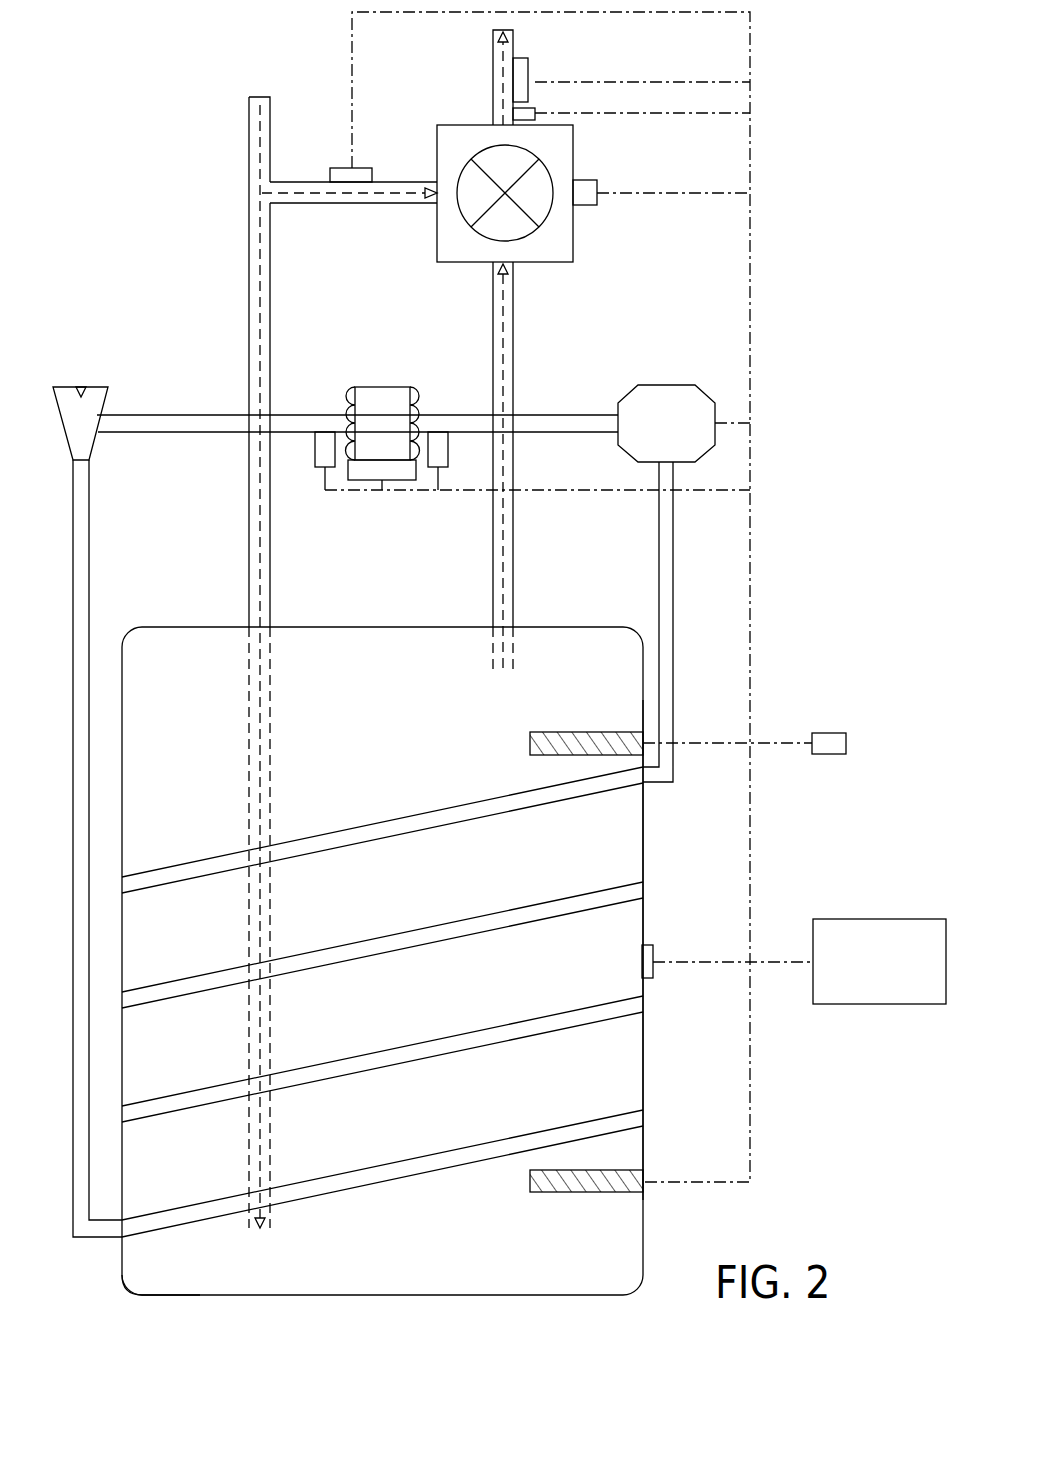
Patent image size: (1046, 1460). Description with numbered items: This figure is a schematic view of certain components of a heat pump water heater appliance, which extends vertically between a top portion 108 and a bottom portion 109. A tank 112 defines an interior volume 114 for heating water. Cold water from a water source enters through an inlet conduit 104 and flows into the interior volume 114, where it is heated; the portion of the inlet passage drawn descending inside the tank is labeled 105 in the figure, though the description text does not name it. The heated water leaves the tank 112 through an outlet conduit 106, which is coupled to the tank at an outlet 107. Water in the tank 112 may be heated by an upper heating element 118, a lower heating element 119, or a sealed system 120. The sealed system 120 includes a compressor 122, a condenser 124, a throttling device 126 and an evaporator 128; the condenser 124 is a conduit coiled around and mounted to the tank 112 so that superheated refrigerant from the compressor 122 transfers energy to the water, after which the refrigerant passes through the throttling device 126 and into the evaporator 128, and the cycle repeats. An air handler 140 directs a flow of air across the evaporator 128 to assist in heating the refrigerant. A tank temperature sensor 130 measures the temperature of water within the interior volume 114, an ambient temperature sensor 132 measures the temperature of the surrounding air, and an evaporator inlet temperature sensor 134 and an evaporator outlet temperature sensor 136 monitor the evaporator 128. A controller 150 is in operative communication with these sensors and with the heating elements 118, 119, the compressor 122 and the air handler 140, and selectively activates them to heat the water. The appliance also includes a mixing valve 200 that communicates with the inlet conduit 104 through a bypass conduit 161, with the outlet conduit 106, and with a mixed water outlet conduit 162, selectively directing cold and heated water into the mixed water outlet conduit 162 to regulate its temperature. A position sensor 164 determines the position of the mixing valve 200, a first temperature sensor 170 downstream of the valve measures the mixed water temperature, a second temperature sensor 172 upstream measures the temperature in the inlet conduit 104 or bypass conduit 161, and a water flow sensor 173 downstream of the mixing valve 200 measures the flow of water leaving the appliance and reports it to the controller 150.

The inlet conduit 104 is at (249, 348).
The cool fluid pipe portion within tank 105 is at (276, 620).
The outlet conduit 106 is at (493, 348).
The outlet of tank 107 is at (525, 620).
The top portion 108 is at (116, 622).
The bottom portion 109 is at (120, 1297).
The tank 112 is at (643, 860).
The interior volume 114 is at (356, 684).
The upper heating element 118 is at (530, 743).
The lower heating element 119 is at (530, 1185).
The sealed system 120 is at (640, 546).
The compressor 122 is at (625, 395).
The condenser 124 is at (393, 842).
The throttling device 126 is at (105, 390).
The evaporator 128 is at (377, 387).
The tank temperature sensor 130 is at (655, 950).
The ambient temperature sensor 132 is at (835, 733).
The evaporator inlet temperature sensor 134 is at (315, 455).
The evaporator outlet temperature sensor 136 is at (448, 455).
The air handler 140 is at (378, 480).
The controller 150 is at (862, 990).
The bypass conduit 161 is at (357, 203).
The mixed water outlet conduit 162 is at (493, 45).
The position sensor 164 is at (597, 185).
The mixed water conduit temperature sensor 170 is at (528, 66).
The inlet conduit temperature sensor 172 is at (330, 172).
The water flow sensor 173 is at (535, 113).
The mixing valve 200 is at (555, 262).